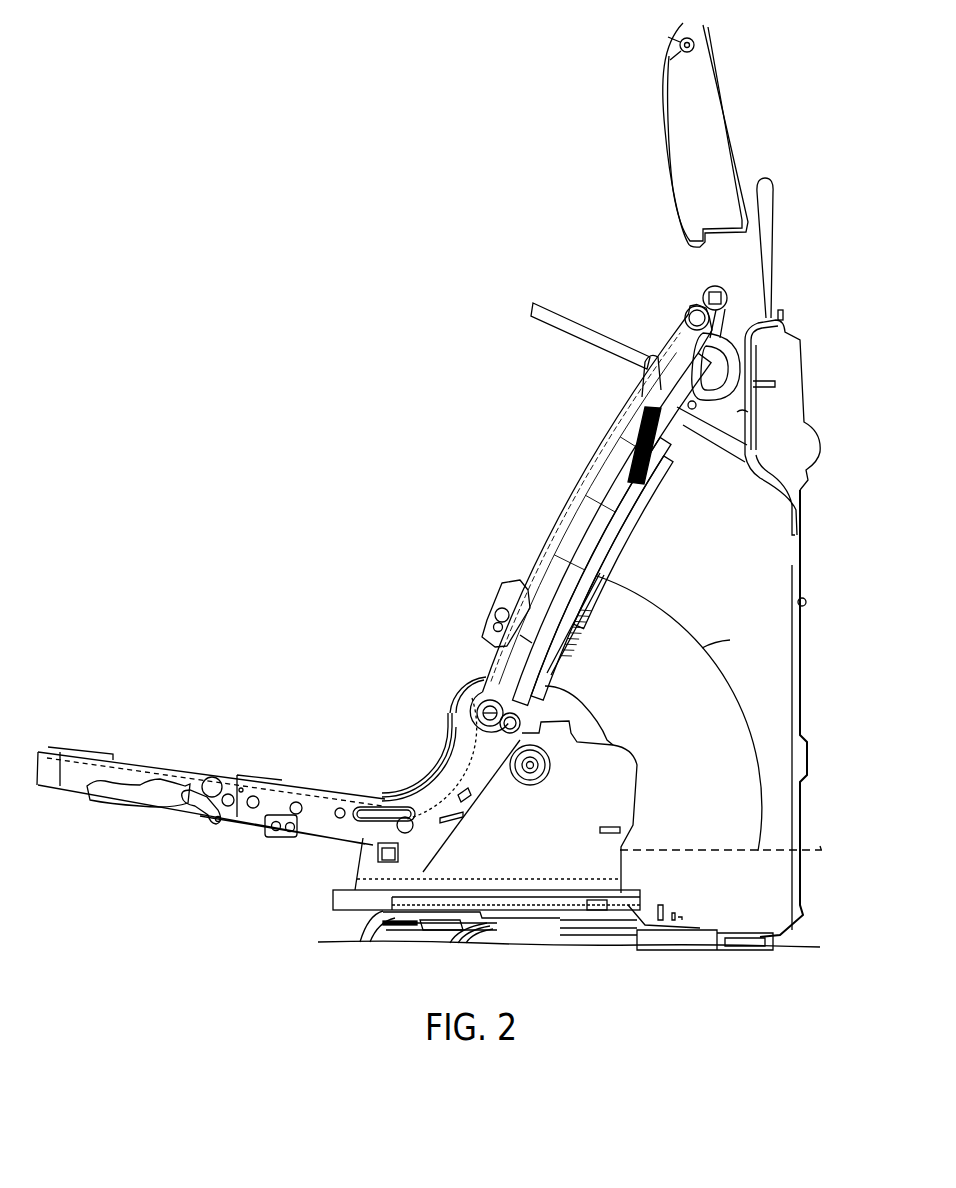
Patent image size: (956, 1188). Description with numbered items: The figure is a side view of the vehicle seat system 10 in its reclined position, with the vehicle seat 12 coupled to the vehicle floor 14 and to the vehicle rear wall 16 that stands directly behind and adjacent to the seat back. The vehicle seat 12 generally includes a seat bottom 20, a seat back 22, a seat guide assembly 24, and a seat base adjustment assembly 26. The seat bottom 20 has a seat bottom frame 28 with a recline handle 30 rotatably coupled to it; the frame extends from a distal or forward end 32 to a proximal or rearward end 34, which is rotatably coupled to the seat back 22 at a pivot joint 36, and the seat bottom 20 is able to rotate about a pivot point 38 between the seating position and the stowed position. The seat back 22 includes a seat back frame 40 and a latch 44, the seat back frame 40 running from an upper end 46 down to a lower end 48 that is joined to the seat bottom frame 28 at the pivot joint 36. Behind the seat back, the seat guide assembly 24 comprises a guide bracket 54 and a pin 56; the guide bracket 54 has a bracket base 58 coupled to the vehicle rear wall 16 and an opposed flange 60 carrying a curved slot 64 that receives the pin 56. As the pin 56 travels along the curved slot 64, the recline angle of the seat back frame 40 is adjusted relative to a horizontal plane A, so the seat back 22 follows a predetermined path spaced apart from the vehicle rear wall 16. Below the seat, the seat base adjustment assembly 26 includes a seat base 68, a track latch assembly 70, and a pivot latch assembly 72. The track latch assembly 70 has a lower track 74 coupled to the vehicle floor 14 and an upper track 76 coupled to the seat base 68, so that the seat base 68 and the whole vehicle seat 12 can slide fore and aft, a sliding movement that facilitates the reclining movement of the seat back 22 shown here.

The vehicle seat system 10 is at (376, 206).
The vehicle seat 12 is at (400, 699).
The vehicle floor 14 is at (338, 943).
The vehicle rear wall 16 is at (795, 605).
The seat bottom 20 is at (145, 810).
The seat back 22 is at (556, 517).
The seat guide assembly 24 is at (752, 310).
The seat base adjustment assembly 26 is at (642, 875).
The seat bottom frame 28 is at (203, 770).
The recline handle 30 is at (166, 798).
The forward end 32 is at (45, 740).
The rearward end 34 is at (446, 701).
The pivot joint 36 is at (512, 706).
The pivot point 38 is at (538, 768).
The seat back frame 40 is at (630, 438).
The latch 44 is at (726, 336).
The upper end 46 is at (661, 305).
The lower end 48 is at (478, 676).
The guide bracket 54 is at (721, 452).
The pin 56 is at (640, 389).
The bracket base 58 is at (740, 405).
The flange 60 is at (740, 420).
The curved slot 64 is at (710, 417).
The seat base 68 is at (623, 807).
The track latch assembly 70 is at (560, 922).
The pivot latch assembly 72 is at (619, 741).
The lower track 74 is at (497, 917).
The upper track 76 is at (632, 910).
The horizontal plane A is at (806, 845).